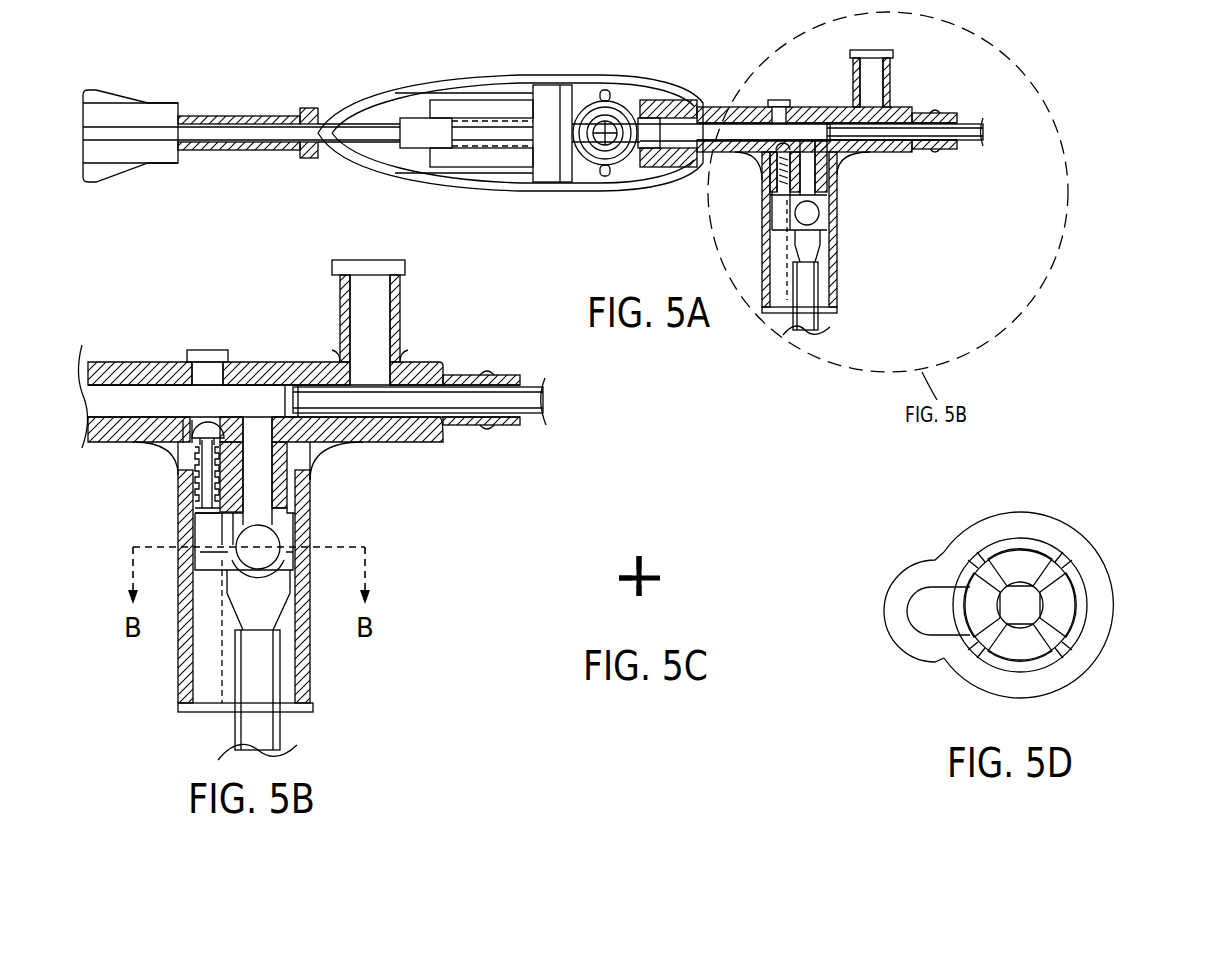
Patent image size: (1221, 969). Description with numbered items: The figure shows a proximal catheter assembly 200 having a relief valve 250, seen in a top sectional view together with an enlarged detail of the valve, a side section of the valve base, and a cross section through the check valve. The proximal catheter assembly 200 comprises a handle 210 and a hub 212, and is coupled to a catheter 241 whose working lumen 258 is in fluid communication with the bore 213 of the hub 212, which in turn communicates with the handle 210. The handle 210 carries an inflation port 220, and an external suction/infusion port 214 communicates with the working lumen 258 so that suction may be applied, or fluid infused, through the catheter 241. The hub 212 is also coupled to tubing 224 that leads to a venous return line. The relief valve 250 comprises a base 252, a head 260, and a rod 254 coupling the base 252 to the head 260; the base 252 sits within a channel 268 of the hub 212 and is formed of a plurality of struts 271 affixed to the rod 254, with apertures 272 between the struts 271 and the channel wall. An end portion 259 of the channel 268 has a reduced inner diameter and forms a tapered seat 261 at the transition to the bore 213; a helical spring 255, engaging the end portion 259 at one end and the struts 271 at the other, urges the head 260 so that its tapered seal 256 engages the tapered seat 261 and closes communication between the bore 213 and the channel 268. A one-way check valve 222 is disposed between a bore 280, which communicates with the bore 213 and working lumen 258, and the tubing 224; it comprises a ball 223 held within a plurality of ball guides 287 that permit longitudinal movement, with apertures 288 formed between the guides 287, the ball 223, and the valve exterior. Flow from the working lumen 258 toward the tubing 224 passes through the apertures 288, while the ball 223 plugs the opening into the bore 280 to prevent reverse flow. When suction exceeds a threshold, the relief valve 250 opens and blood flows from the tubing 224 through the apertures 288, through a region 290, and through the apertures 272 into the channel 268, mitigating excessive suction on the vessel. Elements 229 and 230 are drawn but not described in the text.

In FIG. 5A, the proximal catheter assembly 200 is at (250, 98).
In FIG. 5A, the handle 210 is at (603, 200).
In FIG. 5A, the hub 212 is at (828, 103).
In FIG. 5B, the hub 212 is at (268, 356).
In FIG. 5D, the hub 212 is at (1098, 660).
In FIG. 5A, the bore 213 is at (744, 128).
In FIG. 5B, the bore 213 is at (125, 380).
In FIG. 5A, the external suction/infusion port 214 is at (577, 96).
In FIG. 5A, the inflation port 220 is at (894, 56).
In FIG. 5B, the inflation port 220 is at (408, 267).
In FIG. 5A, the one-way check valve 222 is at (849, 220).
In FIG. 5B, the one-way check valve 222 is at (312, 537).
In FIG. 5D, the one-way check valve 222 is at (1078, 553).
In FIG. 5A, the ball 223 is at (817, 214).
In FIG. 5B, the ball 223 is at (274, 538).
In FIG. 5D, the ball 223 is at (1040, 605).
In FIG. 5A, the tubing 224 is at (824, 322).
In FIG. 5B, the tubing 224 is at (282, 733).
In FIG. 5A, the slider 229 is at (446, 98).
In FIG. 5A, the plunger 230 is at (412, 120).
In FIG. 5A, the catheter 241 is at (965, 142).
In FIG. 5B, the catheter 241 is at (535, 382).
In FIG. 5A, the relief valve 250 is at (758, 186).
In FIG. 5B, the base 252 is at (205, 533).
In FIG. 5C, the base 252 is at (618, 553).
In FIG. 5B, the rod 254 is at (207, 510).
In FIG. 5C, the rod 254 is at (645, 590).
In FIG. 5B, the helical spring 255 is at (200, 488).
In FIG. 5B, the tapered seal 256 is at (163, 447).
In FIG. 5A, the working lumen 258 is at (986, 133).
In FIG. 5B, the working lumen 258 is at (548, 402).
In FIG. 5B, the end portion 259 is at (250, 464).
In FIG. 5B, the head 260 is at (205, 425).
In FIG. 5B, the tapered seat 261 is at (189, 433).
In FIG. 5B, the channel 268 is at (182, 473).
In FIG. 5C, the struts 271 is at (624, 578).
In FIG. 5C, the apertures 272 is at (645, 566).
In FIG. 5B, the bore 280 is at (262, 500).
In FIG. 5B, the ball guides 287 is at (237, 553).
In FIG. 5D, the ball guides 287 is at (1000, 570).
In FIG. 5D, the apertures 288 is at (976, 600).
In FIG. 5B, the region 290 is at (213, 568).
In FIG. 5D, the region 290 is at (912, 610).